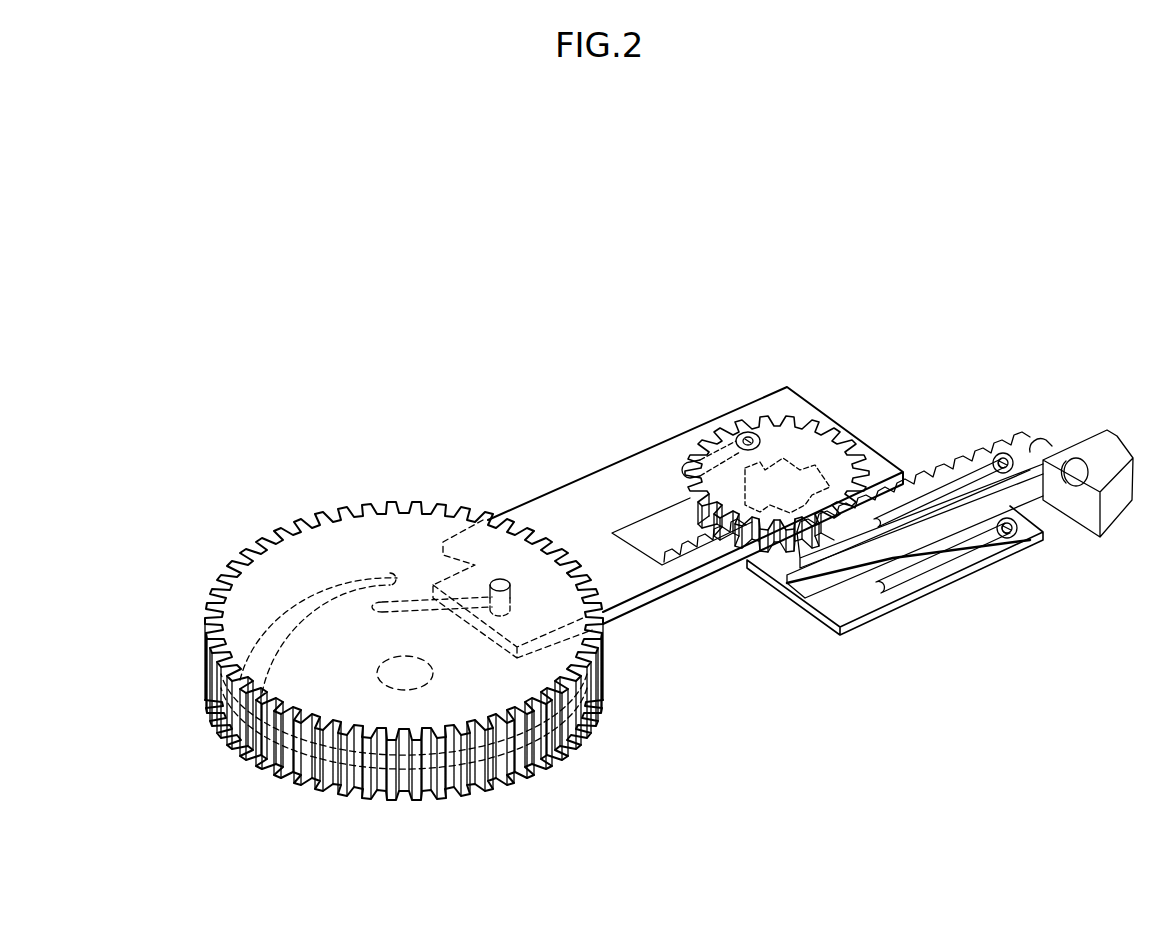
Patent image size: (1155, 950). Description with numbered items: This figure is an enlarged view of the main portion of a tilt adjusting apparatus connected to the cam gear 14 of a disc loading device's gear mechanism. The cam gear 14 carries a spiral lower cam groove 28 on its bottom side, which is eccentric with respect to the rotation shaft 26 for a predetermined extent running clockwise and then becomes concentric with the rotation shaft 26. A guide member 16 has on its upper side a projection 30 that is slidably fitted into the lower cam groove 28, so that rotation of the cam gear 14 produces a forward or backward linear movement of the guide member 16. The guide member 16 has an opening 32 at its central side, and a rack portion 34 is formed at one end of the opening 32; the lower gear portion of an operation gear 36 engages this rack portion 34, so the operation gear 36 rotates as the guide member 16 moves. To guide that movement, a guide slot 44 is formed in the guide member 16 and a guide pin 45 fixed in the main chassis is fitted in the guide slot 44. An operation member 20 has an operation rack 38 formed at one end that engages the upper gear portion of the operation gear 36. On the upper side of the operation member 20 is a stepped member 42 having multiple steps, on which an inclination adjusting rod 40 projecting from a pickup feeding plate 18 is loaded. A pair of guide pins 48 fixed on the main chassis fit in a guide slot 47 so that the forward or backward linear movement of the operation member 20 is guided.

The cam gear 14 is at (291, 562).
The guide member 16 is at (588, 472).
The pickup feeding plate 18 is at (1099, 435).
The operation member 20 is at (982, 580).
The rotation shaft 26 is at (405, 680).
The lower cam groove 28 is at (403, 606).
The projection 30 is at (502, 578).
The opening 32 is at (663, 533).
The rack portion 34 is at (690, 553).
The operation gear 36 is at (816, 444).
The operation rack 38 is at (893, 462).
The inclination adjusting rod 40 is at (1036, 447).
The stepped member 42 is at (833, 585).
The guide slot 44 is at (673, 462).
The guide pin 45 is at (753, 436).
The guide slot 47 is at (898, 590).
The guide pin 48 is at (1018, 534).